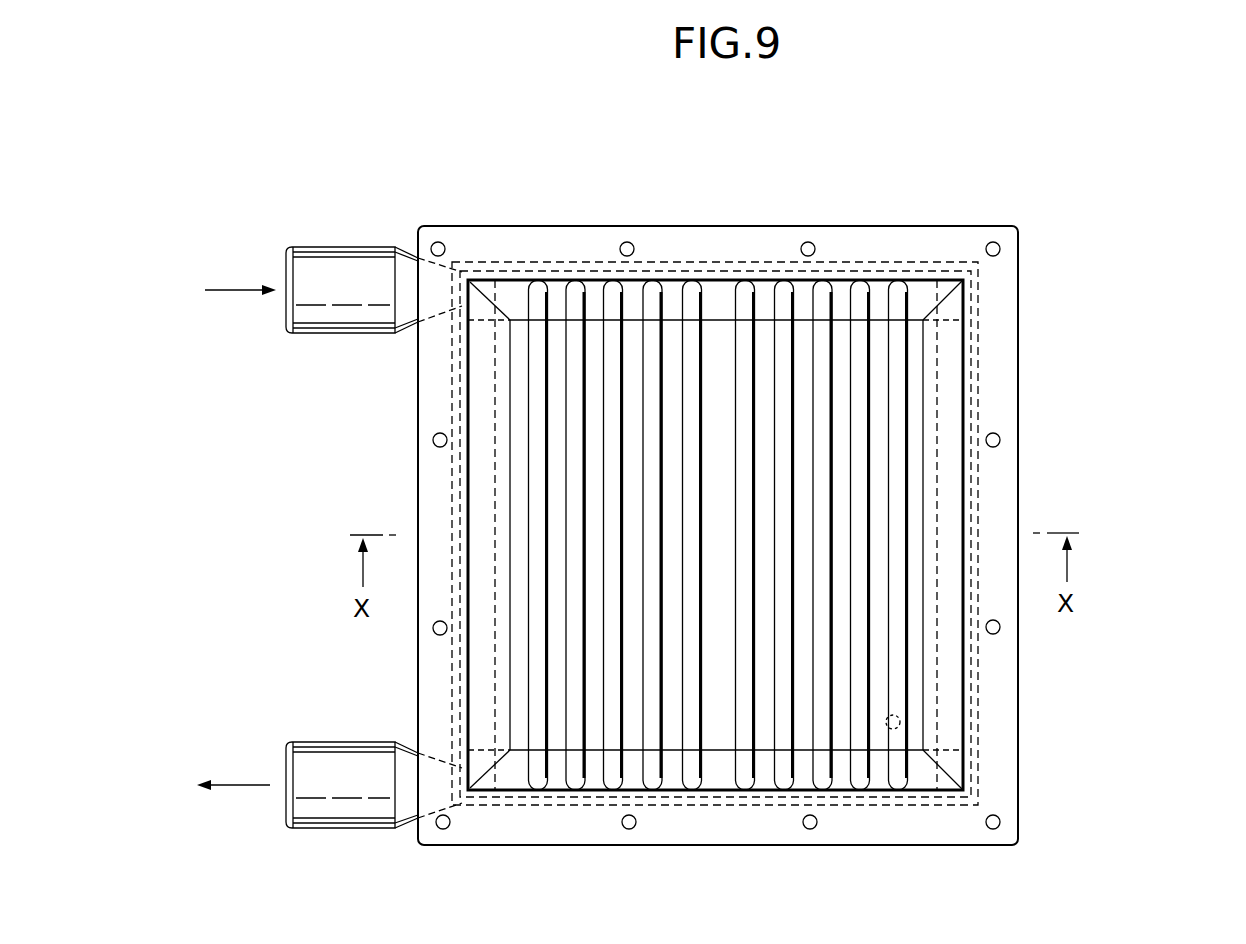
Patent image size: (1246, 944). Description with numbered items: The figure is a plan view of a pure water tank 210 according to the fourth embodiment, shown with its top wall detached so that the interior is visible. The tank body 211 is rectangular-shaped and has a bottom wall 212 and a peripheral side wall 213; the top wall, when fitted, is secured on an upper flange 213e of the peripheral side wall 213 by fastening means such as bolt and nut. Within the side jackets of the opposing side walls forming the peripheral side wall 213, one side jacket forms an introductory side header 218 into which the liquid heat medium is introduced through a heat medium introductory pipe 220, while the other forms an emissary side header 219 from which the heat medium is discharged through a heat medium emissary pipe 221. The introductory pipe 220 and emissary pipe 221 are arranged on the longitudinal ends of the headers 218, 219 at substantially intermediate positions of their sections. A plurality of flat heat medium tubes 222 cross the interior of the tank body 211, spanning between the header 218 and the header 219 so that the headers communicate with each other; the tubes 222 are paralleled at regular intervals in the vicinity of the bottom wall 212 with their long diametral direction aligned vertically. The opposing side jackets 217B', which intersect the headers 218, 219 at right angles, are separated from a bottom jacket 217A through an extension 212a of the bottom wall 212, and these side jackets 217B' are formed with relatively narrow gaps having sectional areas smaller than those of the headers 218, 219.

The pure water tank 210 is at (912, 195).
The tank body 211 is at (1018, 325).
The bottom wall 212 is at (913, 393).
The extension of the bottom wall 212a is at (953, 752).
The peripheral side wall 213 is at (953, 470).
The upper flange 213e is at (535, 240).
The bottom jacket 217A is at (918, 655).
The opposing side jackets 217B' is at (717, 535).
The introductory side header 218 is at (762, 287).
The emissary side header 219 is at (712, 775).
The heat medium introductory pipe 220 is at (343, 245).
The heat medium emissary pipe 221 is at (343, 830).
The heat medium tubes 222 is at (607, 397).